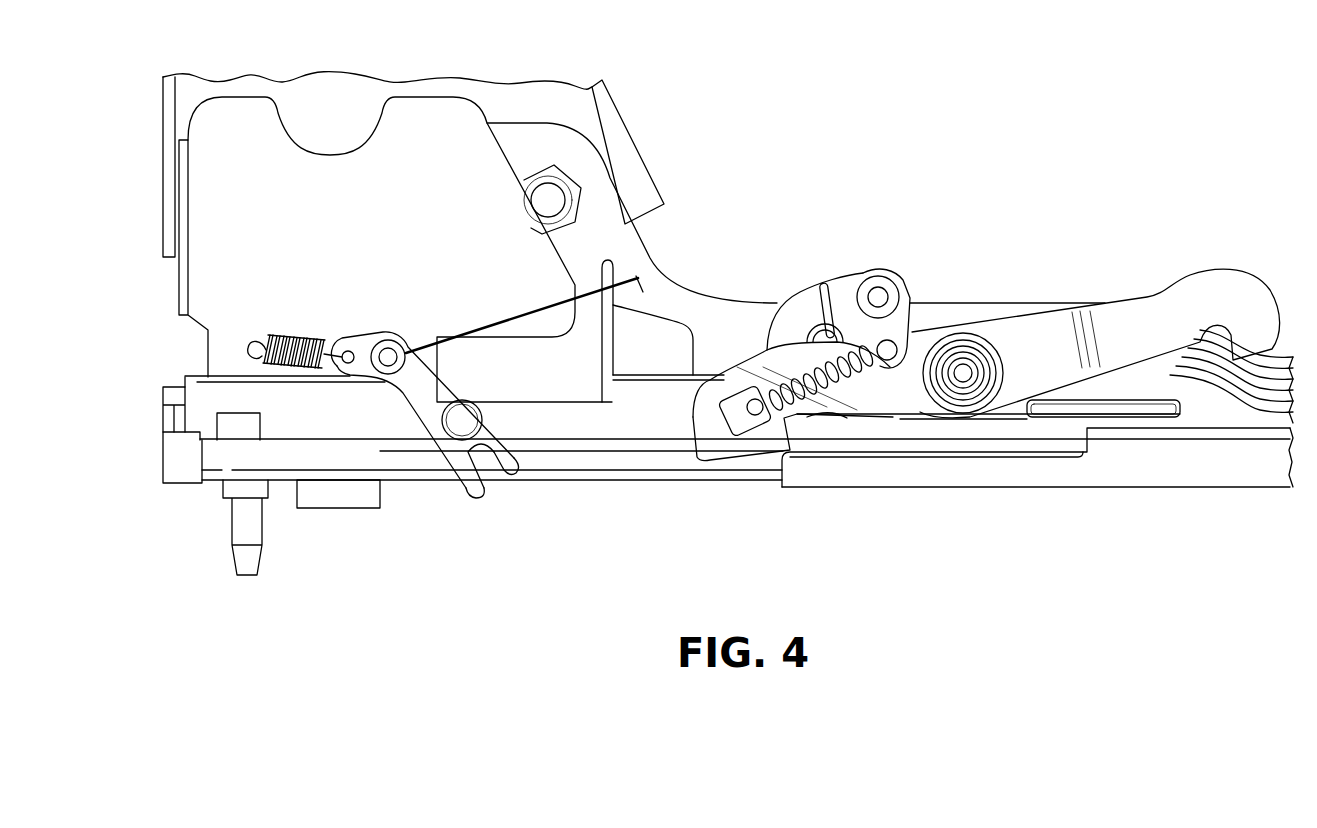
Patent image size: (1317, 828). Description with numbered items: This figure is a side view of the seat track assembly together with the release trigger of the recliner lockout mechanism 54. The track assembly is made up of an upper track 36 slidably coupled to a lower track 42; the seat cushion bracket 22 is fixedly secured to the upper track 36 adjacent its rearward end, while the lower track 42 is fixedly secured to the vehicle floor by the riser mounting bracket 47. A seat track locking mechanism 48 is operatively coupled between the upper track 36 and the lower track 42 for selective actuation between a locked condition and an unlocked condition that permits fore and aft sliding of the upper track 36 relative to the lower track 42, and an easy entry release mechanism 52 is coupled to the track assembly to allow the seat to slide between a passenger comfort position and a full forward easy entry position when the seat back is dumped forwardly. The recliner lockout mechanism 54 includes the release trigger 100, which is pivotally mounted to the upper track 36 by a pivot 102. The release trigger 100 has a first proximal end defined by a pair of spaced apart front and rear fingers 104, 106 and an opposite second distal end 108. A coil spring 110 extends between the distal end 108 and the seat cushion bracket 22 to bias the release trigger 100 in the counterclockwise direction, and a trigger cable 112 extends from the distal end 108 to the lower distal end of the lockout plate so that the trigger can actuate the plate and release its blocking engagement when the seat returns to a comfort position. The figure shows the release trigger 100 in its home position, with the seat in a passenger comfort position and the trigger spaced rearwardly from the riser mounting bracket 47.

The seat cushion bracket 22 is at (565, 100).
The upper track 36 is at (197, 388).
The lower track 42 is at (212, 475).
The riser mounting bracket 47 is at (1193, 465).
The seat track locking mechanism 48 is at (885, 268).
The easy entry release mechanism 52 is at (1027, 316).
The recliner lockout mechanism 54 is at (426, 527).
The release trigger 100 is at (410, 393).
The pivot 102 is at (467, 417).
The front finger 104 is at (523, 461).
The rear finger 106 is at (477, 497).
The distal end 108 is at (355, 332).
The coil spring 110 is at (278, 334).
The trigger cable 112 is at (502, 322).